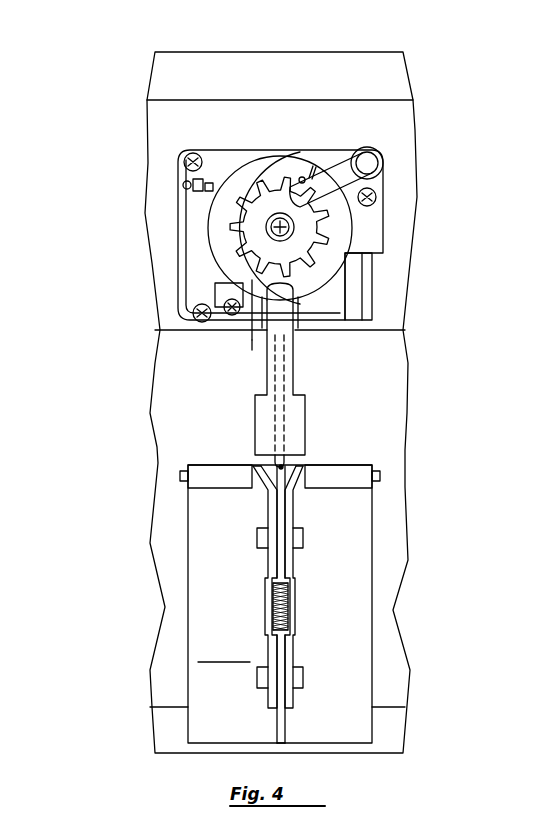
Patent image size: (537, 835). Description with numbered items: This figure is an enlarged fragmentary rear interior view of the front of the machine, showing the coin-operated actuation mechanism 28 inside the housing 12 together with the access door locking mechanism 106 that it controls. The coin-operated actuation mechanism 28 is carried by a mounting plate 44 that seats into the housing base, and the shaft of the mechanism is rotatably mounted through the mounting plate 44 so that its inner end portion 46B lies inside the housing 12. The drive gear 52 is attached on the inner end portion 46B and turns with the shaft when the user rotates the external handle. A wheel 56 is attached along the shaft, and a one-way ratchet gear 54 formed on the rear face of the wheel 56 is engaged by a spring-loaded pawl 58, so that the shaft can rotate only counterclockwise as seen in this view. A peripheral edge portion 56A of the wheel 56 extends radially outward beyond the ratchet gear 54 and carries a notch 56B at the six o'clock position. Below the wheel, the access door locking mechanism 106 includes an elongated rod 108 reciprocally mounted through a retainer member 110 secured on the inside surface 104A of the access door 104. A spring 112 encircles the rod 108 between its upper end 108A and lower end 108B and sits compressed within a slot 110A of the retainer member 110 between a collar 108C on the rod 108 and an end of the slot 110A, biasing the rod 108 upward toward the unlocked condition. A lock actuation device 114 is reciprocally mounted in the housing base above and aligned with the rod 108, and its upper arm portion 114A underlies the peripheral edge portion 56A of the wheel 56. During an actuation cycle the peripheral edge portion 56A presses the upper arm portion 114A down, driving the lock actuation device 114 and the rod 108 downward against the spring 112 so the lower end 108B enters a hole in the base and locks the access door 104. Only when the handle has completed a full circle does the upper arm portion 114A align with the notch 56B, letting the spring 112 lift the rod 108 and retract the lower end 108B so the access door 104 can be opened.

The housing 12 is at (145, 329).
The coin-operated actuation mechanism 28 is at (386, 140).
The mounting plate 44 is at (178, 282).
The inner end portion 46B is at (320, 237).
The drive gear 52 is at (237, 238).
The one-way ratchet gear 54 is at (310, 257).
The wheel 56 is at (218, 220).
The peripheral edge portion 56A is at (250, 322).
The notch 56B is at (285, 327).
The spring-loaded pawl 58 is at (328, 173).
The access door 104 is at (190, 594).
The inside surface 104A is at (224, 652).
The access door locking mechanism 106 is at (340, 561).
The elongated rod 108 is at (280, 510).
The upper end 108A is at (283, 463).
The lower end 108B is at (280, 739).
The collar 108C is at (287, 584).
The retainer member 110 is at (288, 500).
The slot 110A is at (287, 614).
The spring 112 is at (283, 604).
The lock actuation device 114 is at (288, 411).
The upper arm portion 114A is at (252, 345).